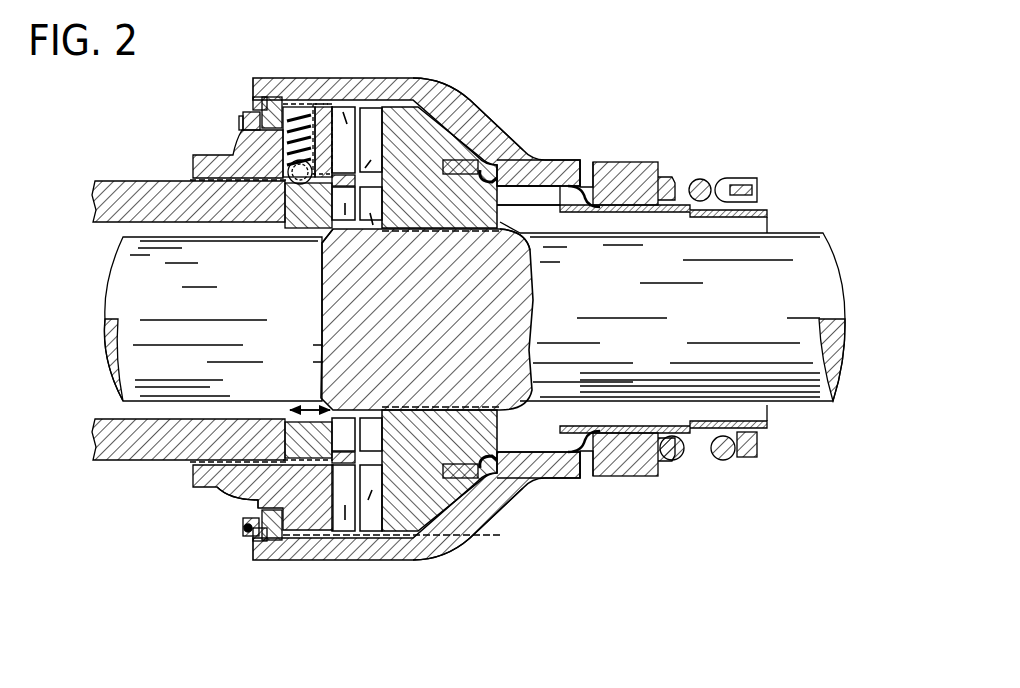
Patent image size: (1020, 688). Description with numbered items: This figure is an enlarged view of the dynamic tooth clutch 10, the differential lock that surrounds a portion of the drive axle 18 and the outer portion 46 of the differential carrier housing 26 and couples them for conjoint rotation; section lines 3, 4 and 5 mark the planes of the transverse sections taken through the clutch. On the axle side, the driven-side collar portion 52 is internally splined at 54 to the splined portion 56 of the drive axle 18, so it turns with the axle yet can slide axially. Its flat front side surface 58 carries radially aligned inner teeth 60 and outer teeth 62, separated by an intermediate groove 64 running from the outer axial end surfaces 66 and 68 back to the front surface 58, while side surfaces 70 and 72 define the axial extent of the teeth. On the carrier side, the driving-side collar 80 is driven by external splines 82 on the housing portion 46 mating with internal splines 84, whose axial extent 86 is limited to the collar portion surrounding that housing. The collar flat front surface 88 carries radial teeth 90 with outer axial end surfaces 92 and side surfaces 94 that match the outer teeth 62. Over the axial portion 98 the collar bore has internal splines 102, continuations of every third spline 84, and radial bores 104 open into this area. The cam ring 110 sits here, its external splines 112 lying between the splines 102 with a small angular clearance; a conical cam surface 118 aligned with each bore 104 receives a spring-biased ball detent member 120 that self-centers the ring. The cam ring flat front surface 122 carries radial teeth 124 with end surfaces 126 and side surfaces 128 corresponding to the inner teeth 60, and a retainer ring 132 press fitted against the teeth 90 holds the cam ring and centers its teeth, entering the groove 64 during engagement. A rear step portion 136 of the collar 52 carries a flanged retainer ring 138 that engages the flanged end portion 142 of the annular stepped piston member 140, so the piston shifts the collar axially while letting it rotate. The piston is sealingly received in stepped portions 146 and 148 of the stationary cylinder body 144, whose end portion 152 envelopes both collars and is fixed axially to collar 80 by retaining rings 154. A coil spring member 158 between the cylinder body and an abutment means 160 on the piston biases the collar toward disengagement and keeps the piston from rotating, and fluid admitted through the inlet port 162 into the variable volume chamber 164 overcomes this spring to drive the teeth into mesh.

The section line 3- 3 is at (337, 38).
The section line 4- 4 is at (376, 15).
The section line 5- 5 is at (377, 128).
The dynamic tooth clutch 10 is at (172, 535).
The drive axle 18 is at (732, 324).
The differential carrier housing 26 is at (93, 180).
The outer portion of differential carrier housing 46 is at (207, 408).
The driven-side collar portion 52 is at (440, 495).
The internal splines 54 is at (510, 208).
The splined portion of drive axle 56 is at (527, 252).
The flat front side surface 58 is at (433, 95).
The inner teeth 60 is at (408, 289).
The radial outer teeth 62 is at (477, 99).
The intermediate groove 64 is at (396, 165).
The outer axial end surface of inner teeth 66 is at (400, 233).
The outer axial end surface of outer teeth 68 is at (400, 97).
The side surfaces of inner teeth 70 is at (402, 430).
The side surfaces of outer teeth 72 is at (413, 560).
The driving-side collar 80 is at (232, 513).
The external splines 82 is at (190, 463).
The internal splines of driving-side collar 84 is at (200, 465).
The axial extent of internal splines 86 is at (195, 160).
The flat front surface of driving-side collar 88 is at (265, 95).
The radial teeth of driving-side collar 90 is at (262, 60).
The outer axial end surfaces of collar teeth 92 is at (338, 118).
The side surfaces of collar teeth 94 is at (323, 558).
The axial portion of collar 98 is at (297, 455).
The internal splines 102 is at (270, 480).
The radial bores 104 is at (258, 115).
The cam ring 110 is at (295, 222).
The external splines of cam ring 112 is at (285, 420).
The conical cam surface 118 is at (283, 200).
The spring-biased ball detent member 120 is at (242, 130).
The flat front surface of cam ring 122 is at (330, 222).
The radial teeth of cam ring 124 is at (323, 288).
The outer axial end surface of cam ring teeth 126 is at (362, 232).
The tooth side surfaces of cam ring teeth 128 is at (343, 420).
The retainer ring 132 is at (355, 428).
The rear step portion 136 is at (462, 160).
The flanged retainer ring 138 is at (527, 155).
The annular stepped piston member 140 is at (617, 420).
The flanged end portion of piston 142 is at (482, 172).
The stationary cylinder body 144 is at (610, 482).
The stepped portion of cylinder body 146 is at (545, 455).
The stepped portion of cylinder body 148 is at (643, 435).
The cylinder end portion 152 is at (445, 545).
The retaining rings 154 is at (250, 537).
The coil spring member 158 is at (705, 178).
The abutment means 160 is at (748, 178).
The fluid pressure inlet port 162 is at (588, 165).
The variable volume chamber 164 is at (598, 192).